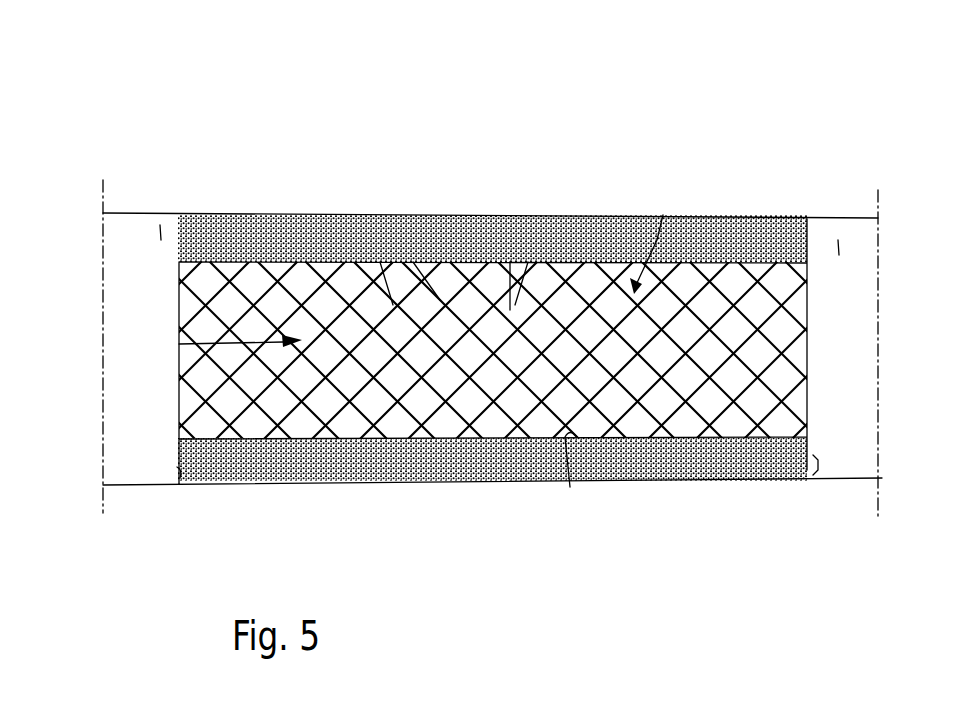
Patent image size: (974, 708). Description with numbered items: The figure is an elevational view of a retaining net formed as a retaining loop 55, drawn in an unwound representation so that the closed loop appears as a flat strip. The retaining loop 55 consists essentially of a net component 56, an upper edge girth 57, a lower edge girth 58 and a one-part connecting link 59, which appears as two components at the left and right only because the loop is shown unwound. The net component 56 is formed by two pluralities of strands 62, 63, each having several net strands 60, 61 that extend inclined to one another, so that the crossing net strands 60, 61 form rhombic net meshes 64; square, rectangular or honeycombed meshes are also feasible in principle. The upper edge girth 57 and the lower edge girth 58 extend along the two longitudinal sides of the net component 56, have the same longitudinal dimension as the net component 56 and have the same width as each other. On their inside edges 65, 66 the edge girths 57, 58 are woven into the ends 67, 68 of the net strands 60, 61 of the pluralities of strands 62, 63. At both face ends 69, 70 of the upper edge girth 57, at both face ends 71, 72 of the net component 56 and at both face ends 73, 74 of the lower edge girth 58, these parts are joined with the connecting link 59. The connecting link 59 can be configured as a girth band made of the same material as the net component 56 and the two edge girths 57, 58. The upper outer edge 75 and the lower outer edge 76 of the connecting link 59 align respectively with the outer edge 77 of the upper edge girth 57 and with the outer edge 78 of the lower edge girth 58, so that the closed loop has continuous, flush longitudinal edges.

The retaining loop 55 is at (344, 110).
The net component 56 is at (179, 344).
The upper edge girth 57 is at (493, 215).
The lower edge girth 58 is at (472, 482).
The connecting link 59 is at (160, 237).
The net strand 60 is at (463, 217).
The net strand 61 is at (597, 215).
The plurality of strands 62 is at (337, 262).
The plurality of strands 63 is at (663, 215).
The net mesh 64 is at (632, 420).
The inside edge 65 is at (713, 215).
The inside edge 66 is at (570, 487).
The end 67 is at (290, 262).
The end 68 is at (260, 262).
The face end 69 is at (177, 230).
The face end 70 is at (805, 240).
The face end 71 is at (136, 346).
The face end 72 is at (807, 287).
The face end 73 is at (180, 483).
The face end 74 is at (815, 477).
The upper outer edge 75 is at (120, 213).
The lower outer edge 76 is at (115, 485).
The outer edge 77 is at (635, 215).
The outer edge 78 is at (513, 483).